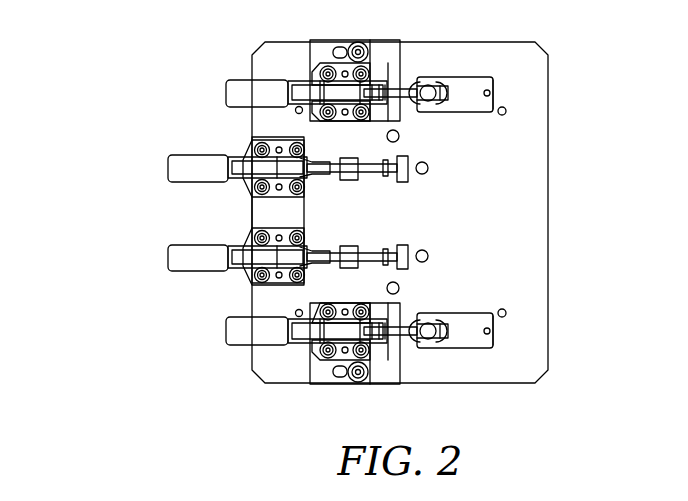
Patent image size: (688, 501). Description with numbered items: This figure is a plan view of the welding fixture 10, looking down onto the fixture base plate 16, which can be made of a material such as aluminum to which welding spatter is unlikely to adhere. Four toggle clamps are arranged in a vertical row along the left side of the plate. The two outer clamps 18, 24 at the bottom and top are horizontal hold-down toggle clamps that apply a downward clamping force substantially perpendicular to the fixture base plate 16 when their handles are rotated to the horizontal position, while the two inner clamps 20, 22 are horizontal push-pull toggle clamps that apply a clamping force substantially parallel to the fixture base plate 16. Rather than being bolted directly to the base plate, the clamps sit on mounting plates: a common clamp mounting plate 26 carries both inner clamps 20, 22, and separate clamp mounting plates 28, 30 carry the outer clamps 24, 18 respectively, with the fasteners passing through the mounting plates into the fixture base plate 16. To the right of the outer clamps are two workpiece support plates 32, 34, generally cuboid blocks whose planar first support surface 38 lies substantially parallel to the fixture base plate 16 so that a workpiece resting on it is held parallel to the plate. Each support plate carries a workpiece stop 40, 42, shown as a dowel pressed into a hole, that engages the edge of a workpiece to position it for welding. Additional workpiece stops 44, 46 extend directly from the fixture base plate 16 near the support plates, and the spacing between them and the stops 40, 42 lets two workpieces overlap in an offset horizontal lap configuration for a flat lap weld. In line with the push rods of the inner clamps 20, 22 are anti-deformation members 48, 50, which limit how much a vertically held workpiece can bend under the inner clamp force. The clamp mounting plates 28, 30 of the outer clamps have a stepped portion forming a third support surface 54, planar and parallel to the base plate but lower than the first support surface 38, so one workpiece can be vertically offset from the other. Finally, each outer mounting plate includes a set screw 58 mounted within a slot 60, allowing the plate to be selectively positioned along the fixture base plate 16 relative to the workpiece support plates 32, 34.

The welding fixture 10 is at (113, 349).
The fixture base plate 16 is at (548, 224).
The outer clamp 18 is at (227, 324).
The inner clamp 20 is at (167, 253).
The inner clamp 22 is at (168, 168).
The outer clamp 24 is at (226, 95).
The common clamp mounting plate 26 is at (254, 213).
The clamp mounting plate 28 is at (310, 51).
The clamp mounting plate 30 is at (305, 371).
The workpiece support plate 32 is at (453, 77).
The workpiece support plate 34 is at (450, 348).
The first support surface 38 is at (473, 85).
The workpiece stop 40 is at (491, 93).
The workpiece stop 42 is at (491, 331).
The additional workpiece stop 44 is at (400, 136).
The additional workpiece stop 46 is at (400, 288).
The anti-deformation member 48 is at (429, 168).
The anti-deformation member 50 is at (428, 252).
The third support surface 54 is at (382, 50).
The set screw 58 is at (361, 42).
The slot 60 is at (346, 49).